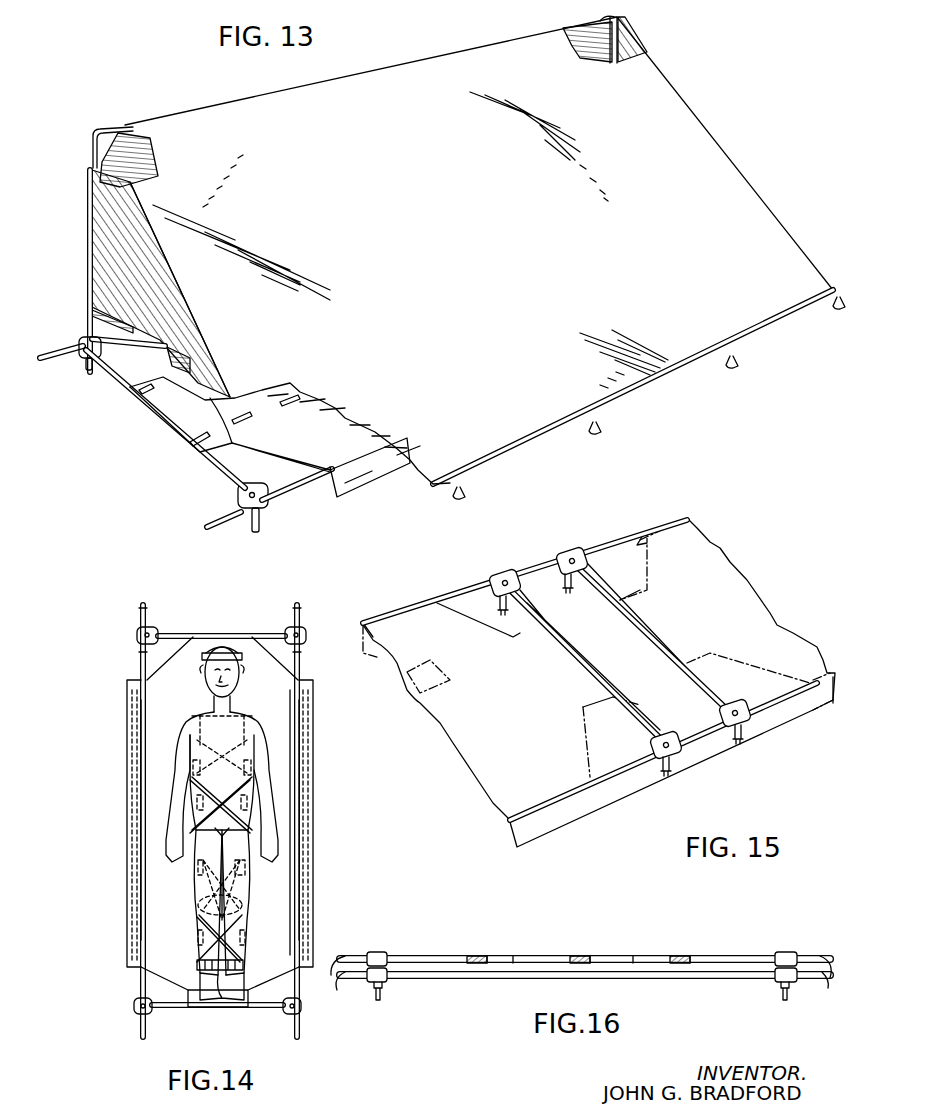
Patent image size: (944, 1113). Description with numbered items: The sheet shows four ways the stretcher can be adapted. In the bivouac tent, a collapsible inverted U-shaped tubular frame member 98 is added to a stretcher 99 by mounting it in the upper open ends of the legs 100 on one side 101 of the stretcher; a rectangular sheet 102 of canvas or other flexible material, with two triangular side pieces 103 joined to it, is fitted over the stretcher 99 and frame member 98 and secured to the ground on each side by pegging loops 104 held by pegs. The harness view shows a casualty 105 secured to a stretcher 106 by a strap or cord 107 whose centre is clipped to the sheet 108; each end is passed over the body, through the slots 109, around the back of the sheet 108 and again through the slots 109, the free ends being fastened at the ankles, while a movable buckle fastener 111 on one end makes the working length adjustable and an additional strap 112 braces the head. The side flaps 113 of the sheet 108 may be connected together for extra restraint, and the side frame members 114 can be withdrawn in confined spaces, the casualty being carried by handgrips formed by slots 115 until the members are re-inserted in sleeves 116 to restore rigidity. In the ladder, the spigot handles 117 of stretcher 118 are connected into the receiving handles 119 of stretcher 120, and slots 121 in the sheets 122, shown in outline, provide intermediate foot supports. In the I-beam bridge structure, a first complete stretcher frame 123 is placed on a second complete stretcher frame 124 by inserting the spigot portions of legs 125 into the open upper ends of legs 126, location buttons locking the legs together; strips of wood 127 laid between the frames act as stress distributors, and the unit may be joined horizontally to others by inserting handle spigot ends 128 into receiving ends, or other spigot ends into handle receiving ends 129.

In FIG. 13, the collapsible inverted U-shaped tubular frame member 98 is at (92, 152).
In FIG. 13, the stretcher 99 is at (210, 403).
In FIG. 13, the legs 100 is at (88, 363).
In FIG. 13, the side of the stretcher 101 is at (122, 347).
In FIG. 13, the rectangular sheet 102 is at (479, 250).
In FIG. 13, the triangular side pieces 103 is at (100, 240).
In FIG. 13, the pegging loops 104 is at (520, 472).
In FIG. 14, the casualty 105 is at (184, 720).
In FIG. 14, the stretcher 106 is at (329, 770).
In FIG. 14, the strap or cord 107 is at (233, 806).
In FIG. 14, the sheet 108 is at (275, 898).
In FIG. 14, the slots 109 is at (197, 918).
In FIG. 14, the movable buckle fastener 111 is at (208, 1000).
In FIG. 14, the additional strap 112 is at (206, 654).
In FIG. 14, the side flaps 113 is at (128, 716).
In FIG. 14, the side frame members 114 is at (140, 655).
In FIG. 14, the slots 115 is at (128, 790).
In FIG. 14, the sleeves 116 is at (143, 818).
In FIG. 15, the spigot handles 117 is at (515, 572).
In FIG. 15, the stretcher 118 is at (470, 718).
In FIG. 15, the receiving handles 119 is at (543, 562).
In FIG. 15, the stretcher 120 is at (732, 597).
In FIG. 15, the slots 121 is at (405, 670).
In FIG. 15, the sheets 122 is at (722, 547).
In FIG. 16, the first complete stretcher frame 123 is at (492, 956).
In FIG. 16, the second complete stretcher frame 124 is at (458, 978).
In FIG. 16, the legs 125 is at (385, 962).
In FIG. 16, the legs 126 is at (383, 986).
In FIG. 16, the strips of wood 127 is at (672, 956).
In FIG. 16, the handle spigot ends 128 is at (822, 957).
In FIG. 16, the handle receiving ends 129 is at (333, 958).